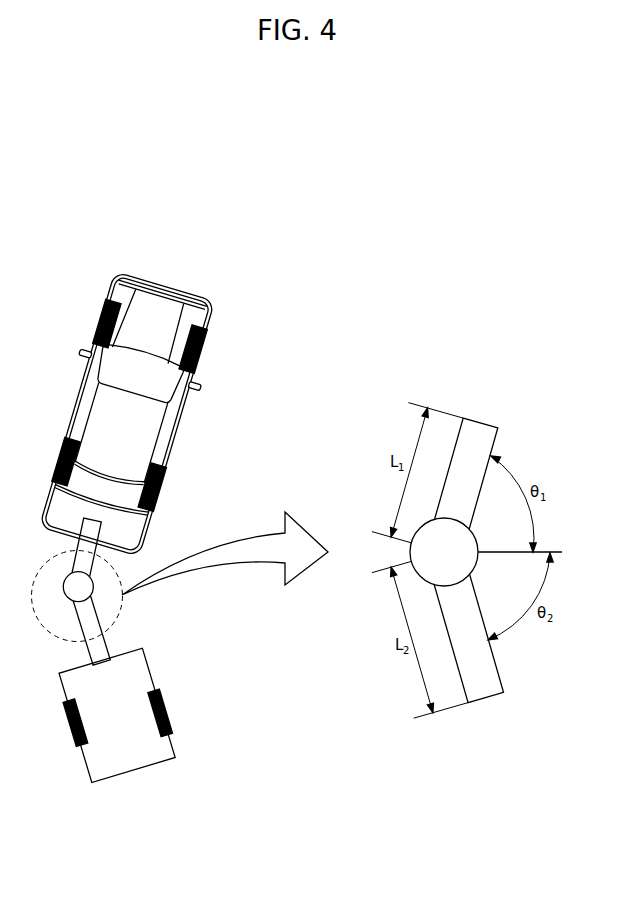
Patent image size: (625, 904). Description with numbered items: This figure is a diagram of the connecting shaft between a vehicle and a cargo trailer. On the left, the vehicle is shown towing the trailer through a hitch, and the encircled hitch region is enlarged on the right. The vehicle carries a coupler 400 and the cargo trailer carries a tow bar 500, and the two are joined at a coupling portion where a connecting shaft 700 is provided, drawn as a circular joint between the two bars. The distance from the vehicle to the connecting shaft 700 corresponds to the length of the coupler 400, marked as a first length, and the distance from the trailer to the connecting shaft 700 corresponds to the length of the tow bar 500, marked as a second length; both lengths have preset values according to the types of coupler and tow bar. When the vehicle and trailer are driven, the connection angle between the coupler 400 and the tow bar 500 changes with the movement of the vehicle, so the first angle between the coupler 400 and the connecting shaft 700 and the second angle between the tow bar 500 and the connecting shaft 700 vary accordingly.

The coupler 400 is at (485, 424).
The tow bar 500 is at (494, 695).
The connecting shaft 700 is at (473, 535).